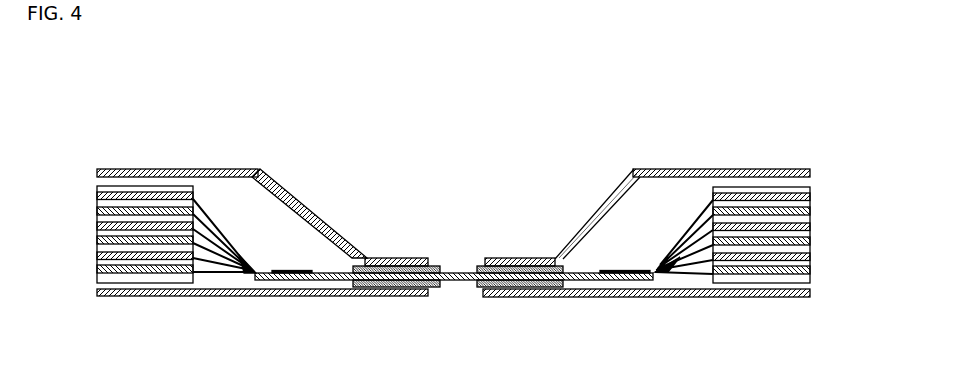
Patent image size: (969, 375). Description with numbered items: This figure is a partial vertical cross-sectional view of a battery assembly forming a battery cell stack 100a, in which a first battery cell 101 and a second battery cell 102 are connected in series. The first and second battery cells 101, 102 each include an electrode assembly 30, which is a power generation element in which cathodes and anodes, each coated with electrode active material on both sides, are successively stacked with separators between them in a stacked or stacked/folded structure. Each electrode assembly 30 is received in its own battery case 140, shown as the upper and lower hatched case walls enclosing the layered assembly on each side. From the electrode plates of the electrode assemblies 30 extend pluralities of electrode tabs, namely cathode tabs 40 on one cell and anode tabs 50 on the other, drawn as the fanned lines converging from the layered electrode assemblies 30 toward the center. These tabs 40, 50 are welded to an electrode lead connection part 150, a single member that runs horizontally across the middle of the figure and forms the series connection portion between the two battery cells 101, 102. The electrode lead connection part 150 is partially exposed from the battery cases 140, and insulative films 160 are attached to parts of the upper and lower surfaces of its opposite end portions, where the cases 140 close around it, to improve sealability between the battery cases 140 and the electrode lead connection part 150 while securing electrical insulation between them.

The battery cell stack 100a is at (112, 101).
The battery case 140 is at (210, 169).
The electrode assembly 30 is at (88, 188).
The cathode tabs 40 is at (227, 235).
The anode tabs 50 is at (683, 230).
The first battery cell 101 is at (345, 200).
The second battery cell 102 is at (562, 201).
The electrode lead connection part 150 is at (458, 273).
The insulative films 160 is at (433, 291).